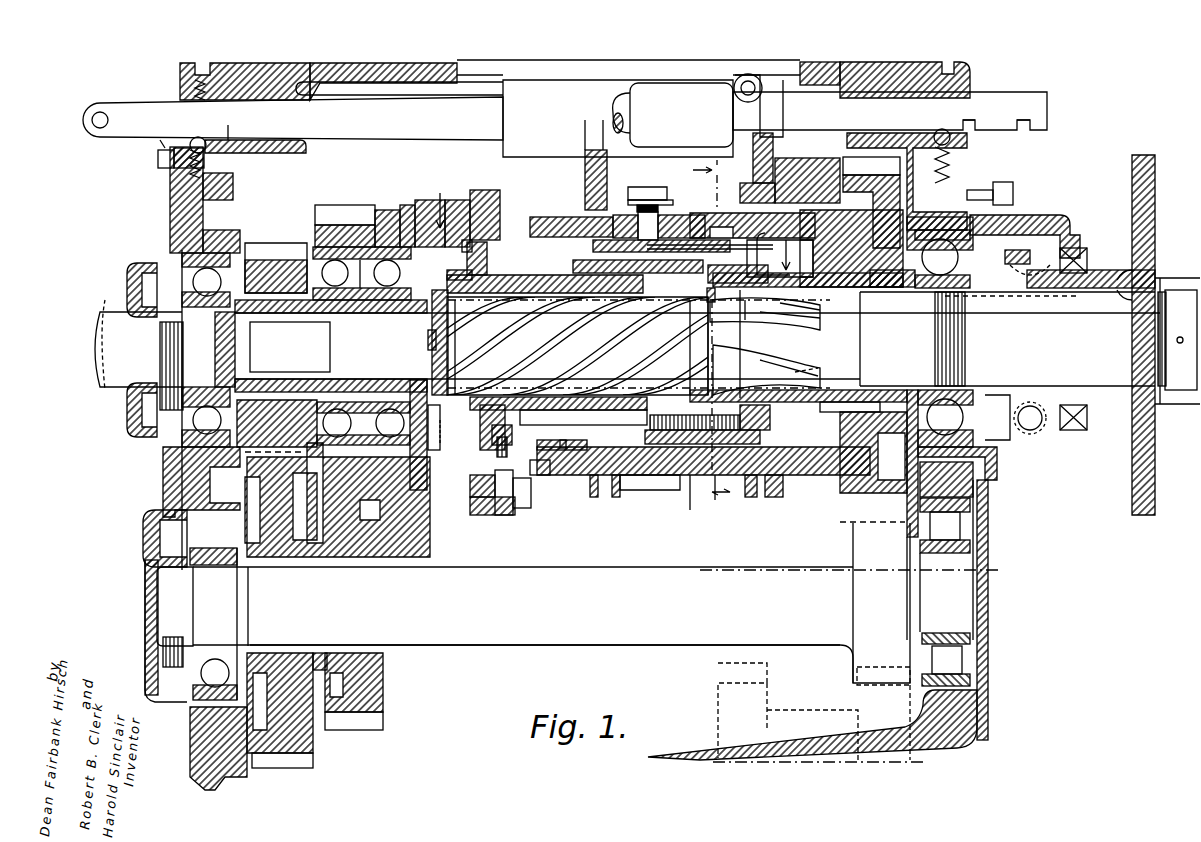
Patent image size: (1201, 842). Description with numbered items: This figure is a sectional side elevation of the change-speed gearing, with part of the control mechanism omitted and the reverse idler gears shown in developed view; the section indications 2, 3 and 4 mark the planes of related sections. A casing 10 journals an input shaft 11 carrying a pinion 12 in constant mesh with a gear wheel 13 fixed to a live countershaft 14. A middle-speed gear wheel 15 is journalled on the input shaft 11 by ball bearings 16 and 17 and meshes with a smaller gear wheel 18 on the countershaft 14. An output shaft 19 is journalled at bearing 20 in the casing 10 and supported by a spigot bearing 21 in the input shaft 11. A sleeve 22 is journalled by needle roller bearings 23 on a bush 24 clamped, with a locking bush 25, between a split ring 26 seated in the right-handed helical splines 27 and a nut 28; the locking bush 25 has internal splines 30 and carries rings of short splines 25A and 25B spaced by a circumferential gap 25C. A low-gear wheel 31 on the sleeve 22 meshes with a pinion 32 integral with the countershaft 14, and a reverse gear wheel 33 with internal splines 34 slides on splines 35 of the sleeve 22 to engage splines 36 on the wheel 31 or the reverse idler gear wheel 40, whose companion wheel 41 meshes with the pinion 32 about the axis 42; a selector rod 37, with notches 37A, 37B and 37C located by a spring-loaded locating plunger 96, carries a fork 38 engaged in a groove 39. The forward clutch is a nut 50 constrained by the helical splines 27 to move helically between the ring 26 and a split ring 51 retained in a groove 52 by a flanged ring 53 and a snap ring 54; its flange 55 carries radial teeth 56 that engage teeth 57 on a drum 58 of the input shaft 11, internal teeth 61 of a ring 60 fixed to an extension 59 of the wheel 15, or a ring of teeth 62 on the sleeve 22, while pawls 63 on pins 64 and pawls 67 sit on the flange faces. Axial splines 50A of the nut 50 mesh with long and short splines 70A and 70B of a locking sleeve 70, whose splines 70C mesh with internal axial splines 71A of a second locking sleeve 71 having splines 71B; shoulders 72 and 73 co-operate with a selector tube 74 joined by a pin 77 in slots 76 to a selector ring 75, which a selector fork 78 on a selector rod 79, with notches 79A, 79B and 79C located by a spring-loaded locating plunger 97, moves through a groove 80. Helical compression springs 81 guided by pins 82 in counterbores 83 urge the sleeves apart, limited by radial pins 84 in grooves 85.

The section line 2 is at (472, 236).
The section line 3 is at (612, 225).
The section line 4 is at (711, 330).
The casing 10 is at (172, 205).
The input shaft 11 is at (118, 340).
The pinion 12 is at (268, 242).
The gear wheel 13 is at (313, 750).
The live countershaft 14 is at (505, 624).
The middle-speed gear wheel 15 is at (343, 212).
The ball bearing 16 is at (328, 262).
The ball bearing 17 is at (380, 210).
The gear wheel 18 is at (383, 712).
The output shaft 19 is at (1030, 341).
The bearing 20 is at (995, 225).
The spigot bearing 21 is at (295, 325).
The sleeve 22 is at (683, 478).
The needle roller bearings 23 is at (850, 392).
The bush 24 is at (862, 290).
The locking bush 25 is at (765, 300).
The short axial splines 25A is at (738, 269).
The short axial splines 25B is at (818, 318).
The circumferential gap 25C is at (785, 358).
The split ring 26 is at (714, 300).
The right-handed helical splines 27 is at (820, 308).
The nut 28 is at (990, 262).
The internal splines 30 is at (812, 367).
The low-gear wheel 31 is at (865, 165).
The pinion 32 is at (853, 655).
The reverse gear wheel 33 is at (815, 540).
The internal splines 34 is at (750, 498).
The splines 35 is at (718, 500).
The splines 36 is at (860, 465).
The selector rod 37 is at (890, 111).
The notch 37A is at (940, 130).
The notch 37B is at (968, 120).
The notch 37C is at (1023, 120).
The fork 38 is at (755, 160).
The circumferential groove 39 is at (773, 498).
The reverse idler gear wheel 40 is at (716, 672).
The reverse idler gear wheel 41 is at (857, 683).
The axis of fixed shaft 42 is at (840, 572).
The nut 50 is at (548, 410).
The axial splines 50A is at (560, 268).
The split ring 51 is at (471, 347).
The groove 52 is at (445, 337).
The flanged ring 53 is at (420, 400).
The snap ring 54 is at (436, 290).
The flange 55 is at (495, 415).
The radial teeth 56 is at (490, 485).
The teeth 57 is at (457, 200).
The drum 58 is at (406, 205).
The extension 59 is at (428, 200).
The ring 60 is at (495, 192).
The internal teeth 61 is at (508, 448).
The ring of teeth 62 is at (585, 443).
The pawls 63 is at (434, 427).
The pins 64 is at (434, 436).
The pawls 67 is at (490, 245).
The locking sleeve 70 is at (566, 252).
The long splines 70A is at (671, 347).
The short splines 70B is at (579, 346).
The splines 70C is at (716, 226).
The second locking sleeve 71 is at (773, 250).
The internal axial splines 71A is at (705, 238).
The axial splines 71B is at (758, 310).
The shoulder 72 is at (595, 256).
The shoulder 73 is at (760, 437).
The selector tube 74 is at (548, 476).
The selector ring 75 is at (618, 498).
The slots 76 is at (628, 215).
The pin 77 is at (645, 186).
The selector fork 78 is at (590, 173).
The selector rod 79 is at (408, 118).
The notch 79A is at (230, 130).
The notch 79B is at (200, 138).
The notch 79C is at (162, 140).
The groove 80 is at (596, 497).
The helical compression springs 81 is at (730, 412).
The pins 82 is at (693, 505).
The counterbores 83 is at (655, 490).
The radial pins 84 is at (700, 325).
The grooves 85 is at (638, 258).
The spring-loaded locating plunger 96 is at (970, 140).
The spring-loaded locating plunger 97 is at (158, 155).